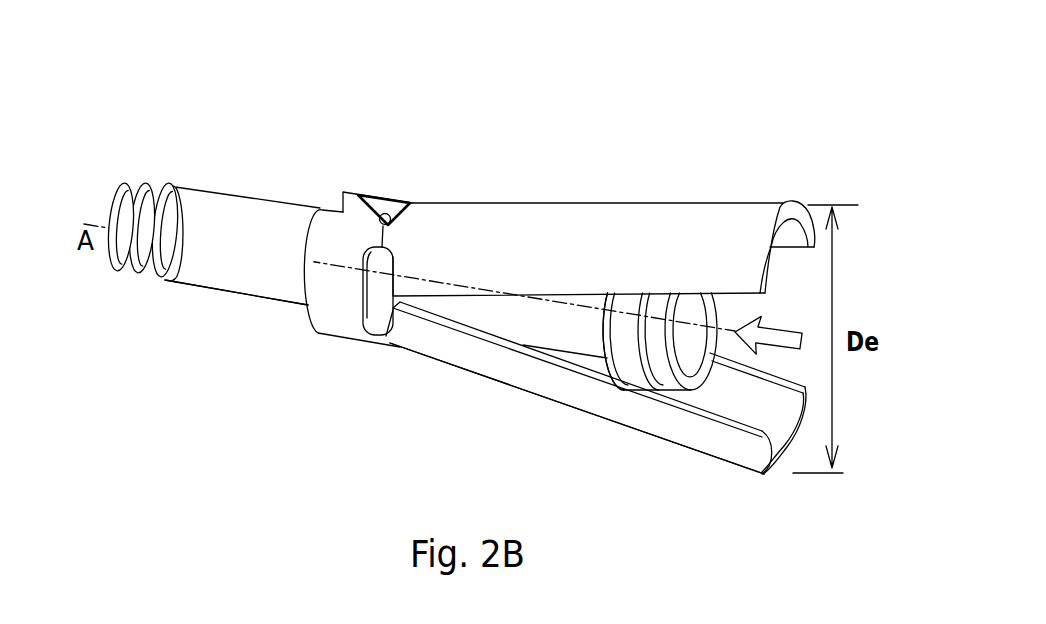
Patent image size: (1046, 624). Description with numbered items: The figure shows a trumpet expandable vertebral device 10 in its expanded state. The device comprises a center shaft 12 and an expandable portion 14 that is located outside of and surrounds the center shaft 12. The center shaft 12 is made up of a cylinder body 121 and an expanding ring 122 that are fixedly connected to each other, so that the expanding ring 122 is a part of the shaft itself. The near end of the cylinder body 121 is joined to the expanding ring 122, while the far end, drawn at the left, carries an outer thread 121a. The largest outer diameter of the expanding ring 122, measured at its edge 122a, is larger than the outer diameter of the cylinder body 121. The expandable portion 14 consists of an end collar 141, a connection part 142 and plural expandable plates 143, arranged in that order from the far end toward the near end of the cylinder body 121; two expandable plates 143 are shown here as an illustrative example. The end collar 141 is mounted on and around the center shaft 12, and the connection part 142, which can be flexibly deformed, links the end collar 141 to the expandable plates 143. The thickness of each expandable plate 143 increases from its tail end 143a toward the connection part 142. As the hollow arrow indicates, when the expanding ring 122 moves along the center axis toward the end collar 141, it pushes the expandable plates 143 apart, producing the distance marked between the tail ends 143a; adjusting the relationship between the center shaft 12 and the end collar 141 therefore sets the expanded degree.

The trumpet expandable vertebral device 10 is at (504, 84).
The center shaft 12 is at (233, 223).
The cylinder body 121 is at (265, 282).
The outer thread 121a is at (145, 180).
The expanding ring 122 is at (629, 355).
The edge 122a is at (653, 320).
The expandable portion 14 is at (450, 348).
The end collar 141 is at (330, 283).
The connection part 142 is at (388, 217).
The expandable plates 143 is at (517, 218).
The tail end 143a is at (783, 207).